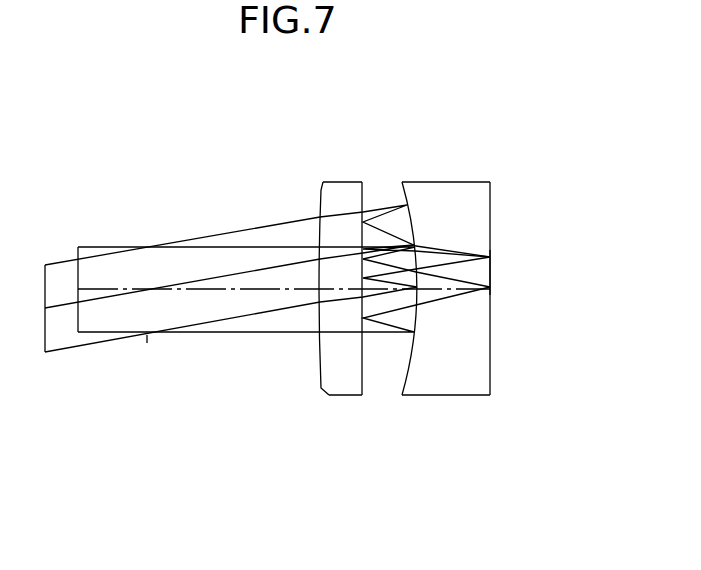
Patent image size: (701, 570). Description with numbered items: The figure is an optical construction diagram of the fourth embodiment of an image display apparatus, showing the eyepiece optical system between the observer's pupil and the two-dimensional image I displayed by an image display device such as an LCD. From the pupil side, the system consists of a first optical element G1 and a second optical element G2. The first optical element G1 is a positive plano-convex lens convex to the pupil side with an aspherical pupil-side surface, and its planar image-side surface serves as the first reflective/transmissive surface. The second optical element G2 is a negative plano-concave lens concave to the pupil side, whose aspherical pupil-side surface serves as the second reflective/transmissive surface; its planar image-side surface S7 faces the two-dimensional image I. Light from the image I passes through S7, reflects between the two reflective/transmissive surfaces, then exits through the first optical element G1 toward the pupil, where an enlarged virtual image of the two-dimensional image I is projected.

The first optical element G1 is at (317, 291).
The second optical element G2 is at (481, 291).
The image-side surface of second optical element S7 is at (491, 333).
The two-dimensional image I is at (491, 269).